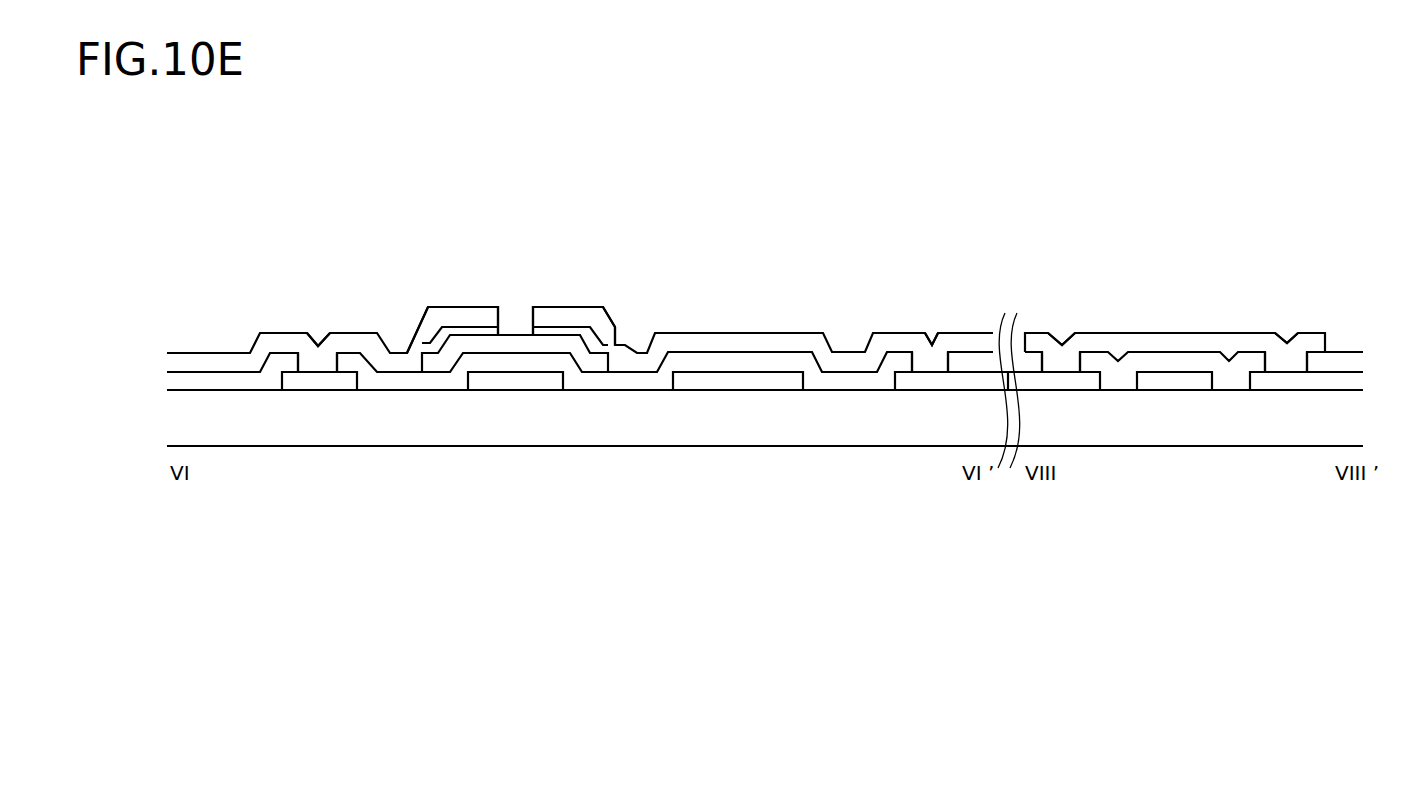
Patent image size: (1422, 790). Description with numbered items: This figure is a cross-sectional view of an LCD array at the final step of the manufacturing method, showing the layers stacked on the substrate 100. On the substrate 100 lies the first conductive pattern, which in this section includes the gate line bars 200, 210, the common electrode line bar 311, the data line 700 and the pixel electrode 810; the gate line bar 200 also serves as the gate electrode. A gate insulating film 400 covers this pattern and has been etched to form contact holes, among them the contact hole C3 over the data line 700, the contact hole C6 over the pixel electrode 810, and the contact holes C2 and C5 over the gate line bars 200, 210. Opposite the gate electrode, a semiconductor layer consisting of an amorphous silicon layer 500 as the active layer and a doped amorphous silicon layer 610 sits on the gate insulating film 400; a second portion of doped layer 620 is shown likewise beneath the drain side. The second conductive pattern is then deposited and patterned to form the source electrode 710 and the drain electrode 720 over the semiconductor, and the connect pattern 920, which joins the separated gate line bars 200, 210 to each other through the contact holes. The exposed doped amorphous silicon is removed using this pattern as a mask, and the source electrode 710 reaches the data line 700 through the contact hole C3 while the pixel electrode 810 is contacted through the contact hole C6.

The substrate 100 is at (610, 435).
The gate line bar 200 is at (506, 383).
The gate line bar 210 is at (1270, 383).
The common electrode line bar 311 is at (747, 383).
The gate insulating film 400 is at (220, 380).
The amorphous silicon layer 500 is at (433, 360).
The doped amorphous silicon layer 610 is at (490, 330).
The ohmic contact layer 620 is at (542, 330).
The data line 700 is at (317, 385).
The source electrode 710 is at (453, 315).
The drain electrode 720 is at (598, 315).
The pixel electrode 810 is at (930, 385).
The connect pattern 920 is at (1149, 338).
The contact hole C2 is at (1062, 331).
The contact hole C3 is at (319, 333).
The contact hole C5 is at (1287, 331).
The contact hole C6 is at (932, 331).